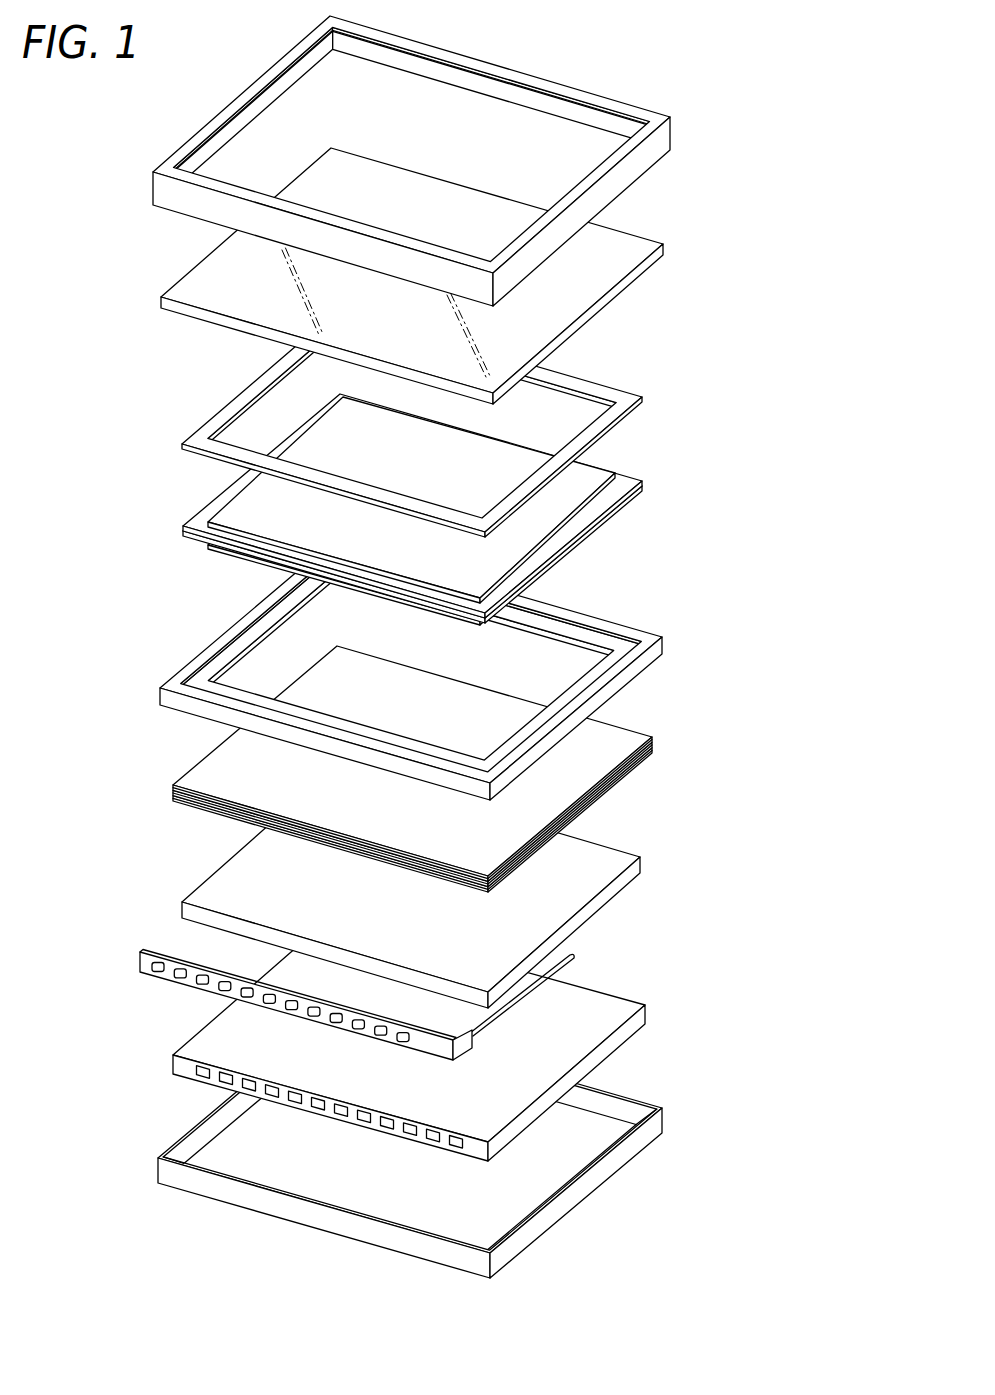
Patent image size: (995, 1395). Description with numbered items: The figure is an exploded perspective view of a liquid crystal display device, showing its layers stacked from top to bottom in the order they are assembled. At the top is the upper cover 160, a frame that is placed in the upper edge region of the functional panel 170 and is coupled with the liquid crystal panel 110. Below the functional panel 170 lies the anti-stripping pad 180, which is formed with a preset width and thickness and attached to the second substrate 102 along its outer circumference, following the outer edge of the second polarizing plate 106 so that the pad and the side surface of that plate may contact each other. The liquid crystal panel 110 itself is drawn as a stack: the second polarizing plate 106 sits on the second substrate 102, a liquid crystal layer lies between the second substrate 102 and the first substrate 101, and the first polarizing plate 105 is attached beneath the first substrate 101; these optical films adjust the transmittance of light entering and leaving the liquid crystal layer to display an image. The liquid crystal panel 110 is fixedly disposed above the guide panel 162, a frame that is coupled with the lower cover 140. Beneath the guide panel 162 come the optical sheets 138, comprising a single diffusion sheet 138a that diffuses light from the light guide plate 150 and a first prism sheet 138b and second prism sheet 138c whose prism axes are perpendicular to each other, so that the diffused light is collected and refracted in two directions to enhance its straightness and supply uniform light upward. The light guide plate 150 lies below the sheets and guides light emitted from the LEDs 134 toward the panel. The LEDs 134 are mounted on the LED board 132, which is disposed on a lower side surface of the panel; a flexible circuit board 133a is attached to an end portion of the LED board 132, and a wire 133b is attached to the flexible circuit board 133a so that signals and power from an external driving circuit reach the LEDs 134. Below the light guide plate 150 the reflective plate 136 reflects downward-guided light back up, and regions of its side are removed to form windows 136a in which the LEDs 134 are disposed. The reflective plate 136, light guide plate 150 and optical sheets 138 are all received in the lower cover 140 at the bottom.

The upper cover 160 is at (672, 134).
The functional panel 170 is at (666, 248).
The anti-stripping pad 180 is at (643, 400).
The liquid crystal panel 110 is at (354, 509).
The second polarizing plate 106 is at (247, 500).
The second substrate 102 is at (205, 520).
The first substrate 101 is at (196, 534).
The first polarizing plate 105 is at (213, 551).
The guide panel 162 is at (662, 643).
The optical sheets 138 is at (487, 769).
The diffusion sheet 138a is at (652, 751).
The first prism sheet 138b is at (654, 744).
The second prism sheet 138c is at (652, 736).
The light guide plate 150 is at (642, 866).
The LED board 132 is at (261, 1002).
The LEDs 134 is at (157, 970).
The flexible circuit board 133a is at (474, 1052).
The wire 133b is at (576, 958).
The reflective plate 136 is at (419, 1039).
The windows 136a is at (197, 1071).
The lower cover 140 is at (650, 1102).